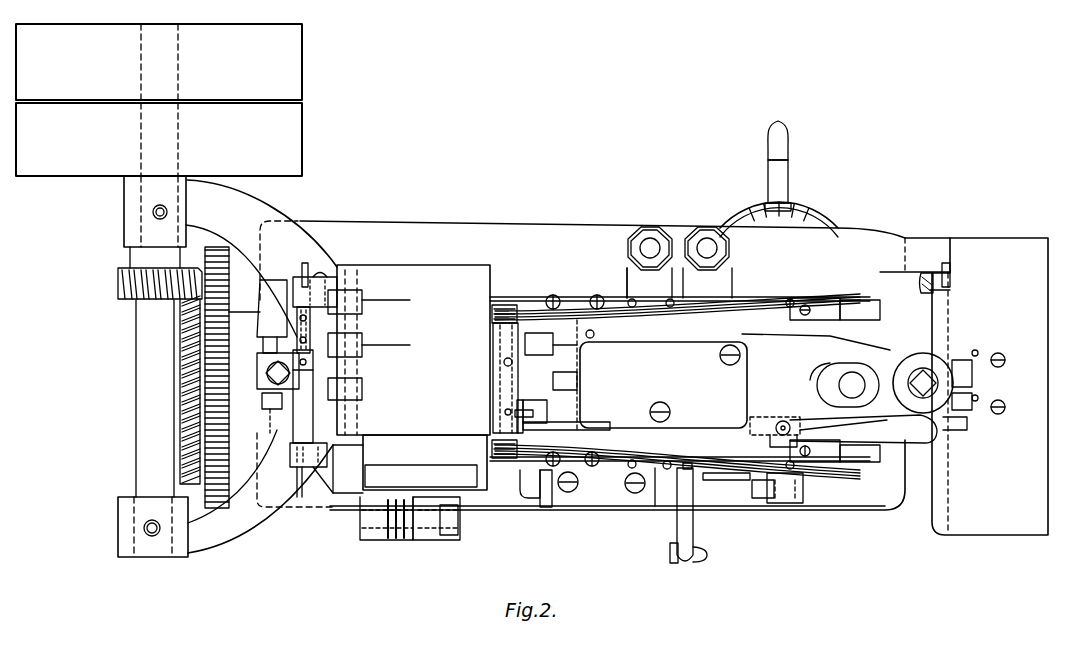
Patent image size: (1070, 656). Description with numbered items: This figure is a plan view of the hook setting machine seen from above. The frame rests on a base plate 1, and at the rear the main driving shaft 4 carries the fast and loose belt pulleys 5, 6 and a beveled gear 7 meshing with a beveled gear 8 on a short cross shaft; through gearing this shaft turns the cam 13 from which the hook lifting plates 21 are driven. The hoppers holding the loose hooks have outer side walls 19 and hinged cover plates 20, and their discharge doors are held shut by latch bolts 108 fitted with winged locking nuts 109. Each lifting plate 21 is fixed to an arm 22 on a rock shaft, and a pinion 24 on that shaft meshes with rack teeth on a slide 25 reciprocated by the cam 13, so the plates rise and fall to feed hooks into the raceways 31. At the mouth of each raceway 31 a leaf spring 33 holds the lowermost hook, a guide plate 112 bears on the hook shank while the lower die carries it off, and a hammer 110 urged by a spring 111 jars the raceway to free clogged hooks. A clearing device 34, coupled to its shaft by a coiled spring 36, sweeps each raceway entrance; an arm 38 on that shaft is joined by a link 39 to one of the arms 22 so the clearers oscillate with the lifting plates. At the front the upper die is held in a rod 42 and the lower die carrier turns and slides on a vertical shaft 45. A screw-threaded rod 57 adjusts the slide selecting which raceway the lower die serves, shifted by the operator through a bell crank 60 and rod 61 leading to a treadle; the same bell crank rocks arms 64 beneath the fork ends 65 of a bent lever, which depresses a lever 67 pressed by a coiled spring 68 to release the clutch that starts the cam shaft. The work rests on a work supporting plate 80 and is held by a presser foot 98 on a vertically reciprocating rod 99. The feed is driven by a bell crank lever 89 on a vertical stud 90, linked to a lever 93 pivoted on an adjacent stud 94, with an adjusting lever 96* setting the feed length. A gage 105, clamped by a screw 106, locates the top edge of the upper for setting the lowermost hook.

The base plate 1 is at (500, 228).
The main driving shaft 4 is at (136, 362).
The fast belt pulley 5 is at (300, 74).
The loose belt pulley 6 is at (300, 141).
The beveled gear 7 is at (122, 283).
The beveled gear 8 is at (182, 410).
The cam 13 is at (240, 320).
The outer side wall 19 is at (352, 498).
The cover plate 20 is at (402, 272).
The hook lifting plate 21 is at (425, 462).
The arm 22 is at (538, 330).
The pinion 24 is at (570, 380).
The slide 25 is at (262, 392).
The raceway 31 is at (574, 300).
The leaf spring 33 is at (830, 310).
The clearing device 34 is at (492, 310).
The coiled spring 36 is at (493, 345).
The arm 38 is at (500, 408).
The link 39 is at (548, 414).
The rod 42 is at (930, 376).
The vertical shaft 45 is at (840, 385).
The screw-threaded rod 57 is at (718, 478).
The bell crank 60 is at (690, 528).
The rod 61 is at (708, 556).
The arms 64 is at (542, 500).
The fork ends 65 is at (528, 490).
The lever 67 is at (430, 540).
The coiled spring 68 is at (390, 540).
The work supporting plate 80 is at (1030, 528).
The bell crank lever 89 is at (866, 238).
The vertical stud 90 is at (708, 245).
The lever 93 is at (634, 282).
The vertical stud 94 is at (650, 245).
The adjusting lever 96 is at (782, 178).
The presser foot 98 is at (937, 442).
The vertically reciprocating rod 99 is at (784, 424).
The gage 105 is at (950, 270).
The clamping screw 106 is at (942, 292).
The latch bolt 108 is at (300, 330).
The winged locking nut 109 is at (312, 262).
The hammer 110 is at (810, 505).
The spring 111 is at (764, 500).
The guide plate 112 is at (876, 318).